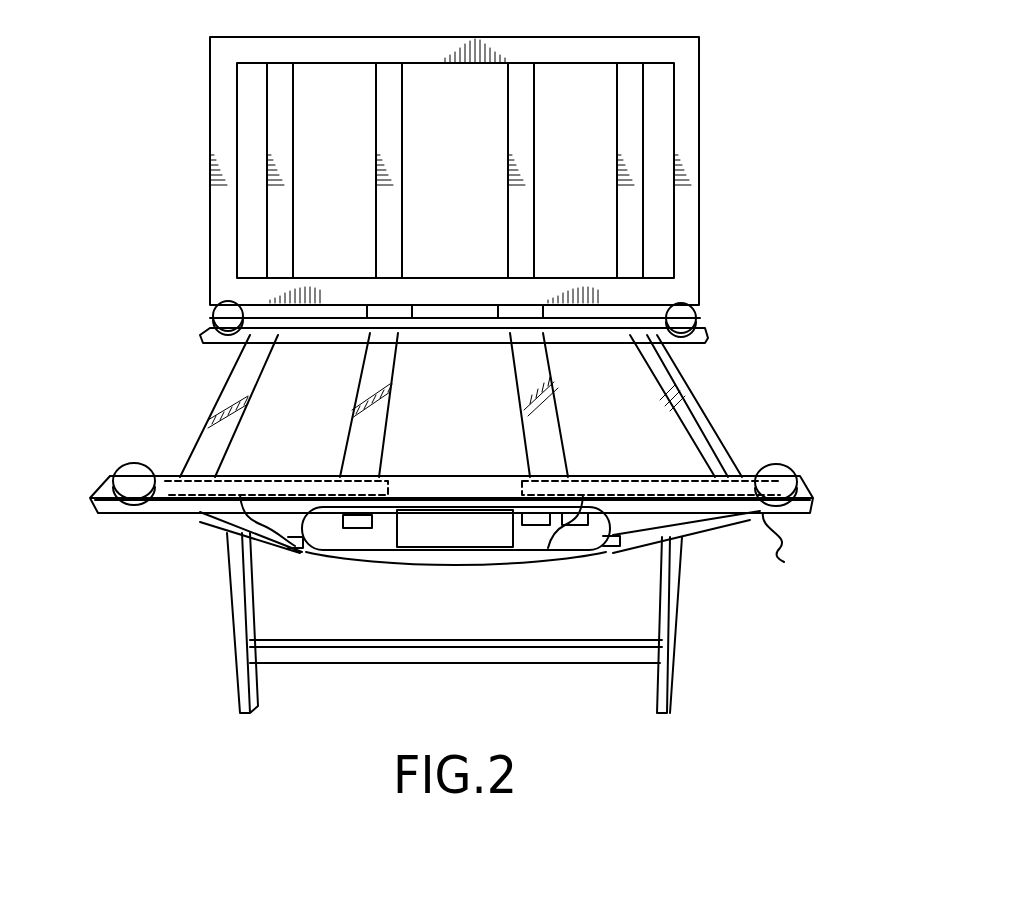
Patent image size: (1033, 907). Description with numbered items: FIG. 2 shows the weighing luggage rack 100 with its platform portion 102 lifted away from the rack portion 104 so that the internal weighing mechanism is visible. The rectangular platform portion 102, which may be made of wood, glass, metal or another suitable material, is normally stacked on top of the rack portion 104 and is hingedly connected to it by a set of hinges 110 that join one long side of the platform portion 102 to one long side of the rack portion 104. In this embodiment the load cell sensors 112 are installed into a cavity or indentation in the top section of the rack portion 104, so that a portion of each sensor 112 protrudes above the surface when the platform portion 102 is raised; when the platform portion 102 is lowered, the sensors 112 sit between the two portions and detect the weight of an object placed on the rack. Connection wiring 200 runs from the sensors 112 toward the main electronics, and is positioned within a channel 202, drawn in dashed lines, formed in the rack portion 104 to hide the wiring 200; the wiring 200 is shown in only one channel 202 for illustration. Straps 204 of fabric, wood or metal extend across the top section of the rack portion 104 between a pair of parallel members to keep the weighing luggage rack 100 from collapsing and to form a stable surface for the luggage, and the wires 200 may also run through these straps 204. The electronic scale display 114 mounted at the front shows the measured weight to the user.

The weighing luggage rack 100 is at (178, 137).
The platform portion 102 is at (685, 88).
The rack portion 104 is at (107, 490).
The hinges 110 is at (385, 318).
The load cell sensors 112 is at (228, 316).
The electronic scale display 114 is at (420, 538).
The connection wiring 200 is at (662, 403).
The channel 202 is at (276, 548).
The straps 204 is at (217, 442).